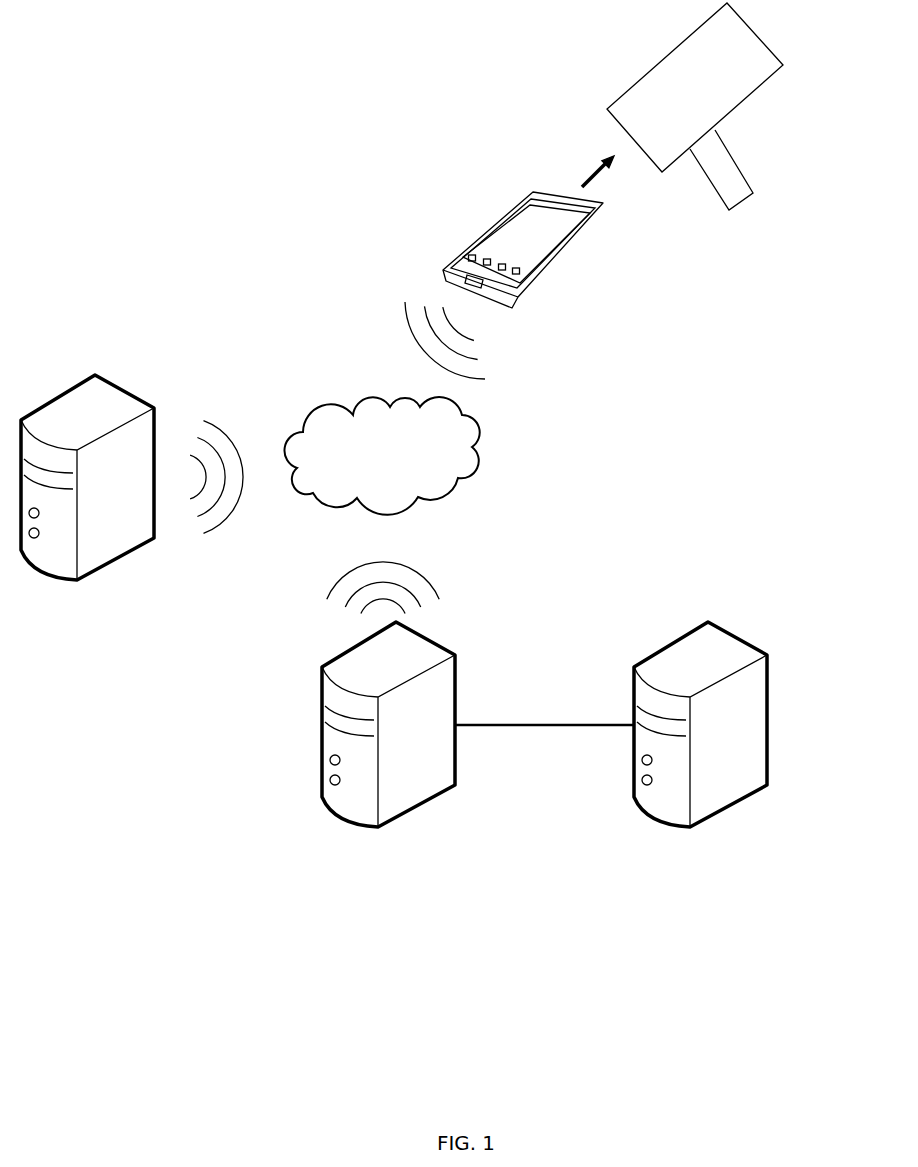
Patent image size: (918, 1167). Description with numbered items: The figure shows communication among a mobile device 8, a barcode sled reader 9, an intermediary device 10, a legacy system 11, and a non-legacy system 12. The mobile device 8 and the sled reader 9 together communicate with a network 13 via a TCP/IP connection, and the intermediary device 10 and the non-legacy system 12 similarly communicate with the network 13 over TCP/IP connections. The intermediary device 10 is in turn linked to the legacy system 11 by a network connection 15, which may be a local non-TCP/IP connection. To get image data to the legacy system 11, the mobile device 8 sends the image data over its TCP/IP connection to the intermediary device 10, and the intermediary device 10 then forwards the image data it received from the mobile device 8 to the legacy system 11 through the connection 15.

The mobile device 8 is at (466, 228).
The barcode sled reader 9 is at (846, 164).
The intermediary device 10 is at (439, 878).
The legacy system 11 is at (736, 880).
The non-legacy system 12 is at (125, 634).
The network 13 is at (389, 478).
The network connection 15 is at (550, 725).